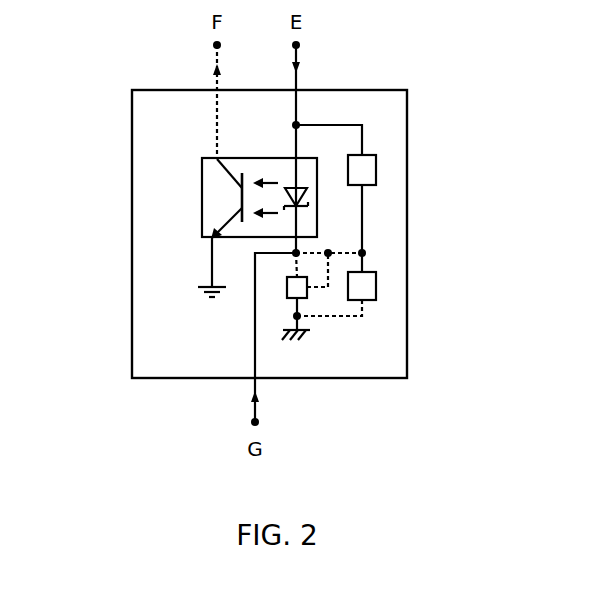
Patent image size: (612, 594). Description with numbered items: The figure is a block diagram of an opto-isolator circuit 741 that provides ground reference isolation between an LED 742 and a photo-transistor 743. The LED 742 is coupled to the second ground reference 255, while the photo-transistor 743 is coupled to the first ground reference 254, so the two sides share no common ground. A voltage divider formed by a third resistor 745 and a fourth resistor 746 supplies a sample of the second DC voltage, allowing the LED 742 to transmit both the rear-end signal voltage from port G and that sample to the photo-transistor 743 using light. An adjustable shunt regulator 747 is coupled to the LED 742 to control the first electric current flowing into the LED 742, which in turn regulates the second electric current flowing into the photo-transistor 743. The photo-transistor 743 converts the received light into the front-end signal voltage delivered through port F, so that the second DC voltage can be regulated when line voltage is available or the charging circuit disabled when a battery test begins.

The opto-isolator circuit 741 is at (412, 338).
The LED 742 is at (292, 185).
The photo-transistor 743 is at (237, 192).
The third resistor 745 is at (368, 155).
The fourth resistor 746 is at (377, 280).
The adjustable shunt regulator 747 is at (308, 298).
The first ground reference 254 is at (203, 298).
The second ground reference 255 is at (302, 343).